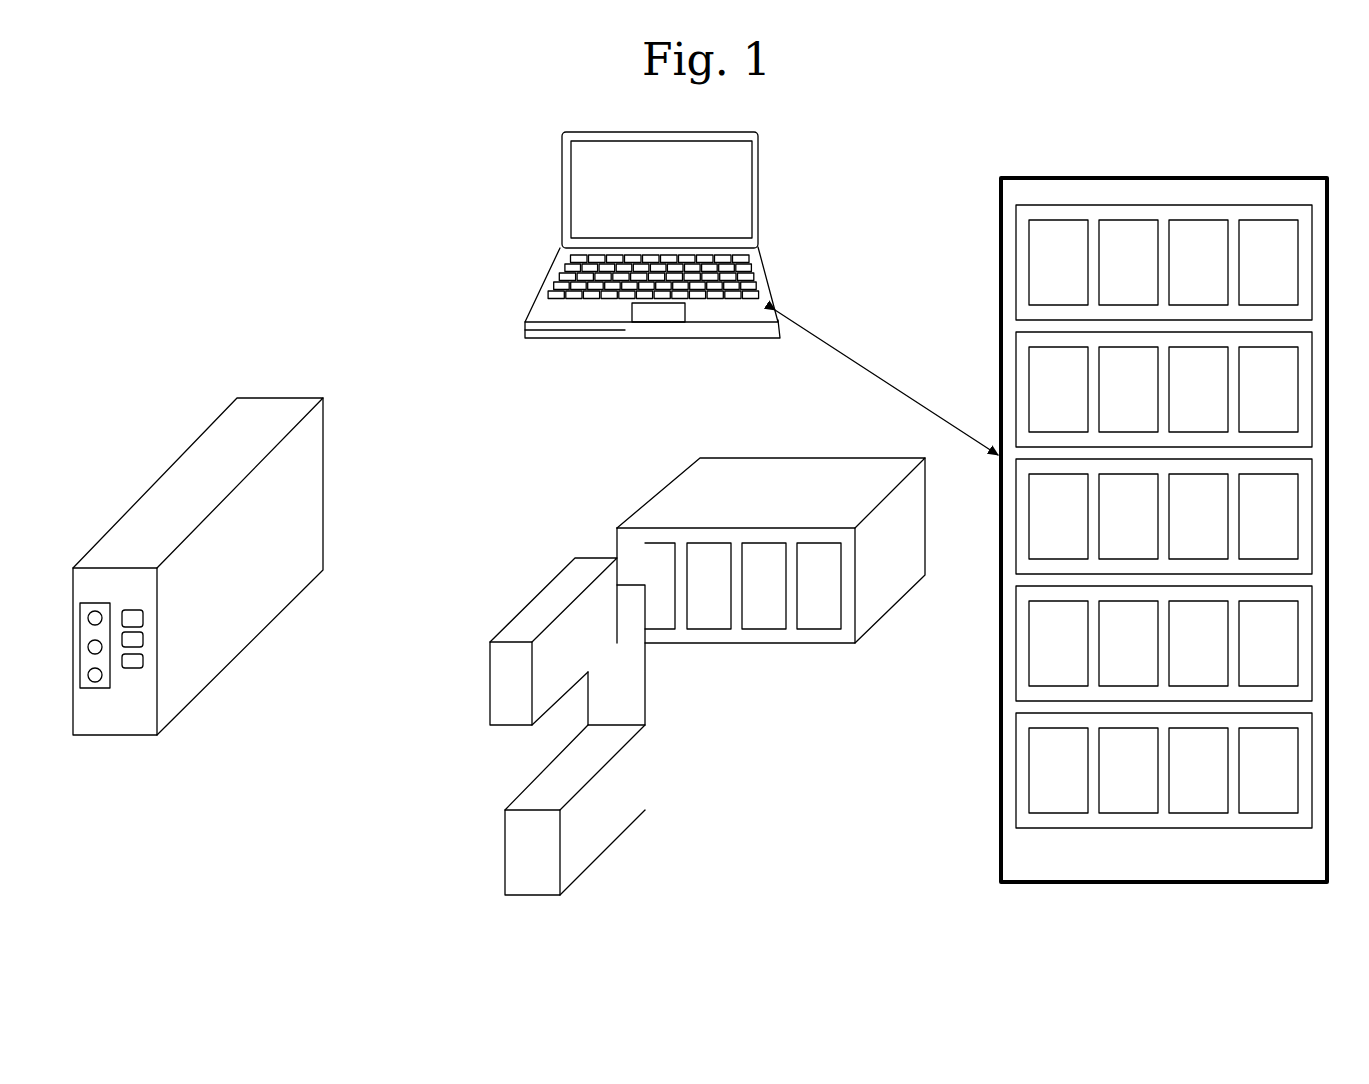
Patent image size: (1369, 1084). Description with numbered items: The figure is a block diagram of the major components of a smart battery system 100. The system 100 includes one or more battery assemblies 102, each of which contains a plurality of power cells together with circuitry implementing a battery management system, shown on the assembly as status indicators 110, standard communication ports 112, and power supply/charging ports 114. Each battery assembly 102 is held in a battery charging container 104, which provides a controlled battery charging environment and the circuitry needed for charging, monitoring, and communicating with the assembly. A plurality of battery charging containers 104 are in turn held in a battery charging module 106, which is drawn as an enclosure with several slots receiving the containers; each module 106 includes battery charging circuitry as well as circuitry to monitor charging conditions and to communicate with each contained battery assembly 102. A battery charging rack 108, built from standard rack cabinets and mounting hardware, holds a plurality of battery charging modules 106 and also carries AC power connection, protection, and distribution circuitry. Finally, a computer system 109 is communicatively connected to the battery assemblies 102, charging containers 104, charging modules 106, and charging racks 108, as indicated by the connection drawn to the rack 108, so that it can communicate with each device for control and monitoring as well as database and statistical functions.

The smart battery system 100 is at (226, 904).
The battery assembly 102 is at (290, 400).
The battery charging container 104 is at (633, 787).
The battery charging module 106 is at (688, 470).
The battery charging rack 108 is at (1097, 177).
The computer system 109 is at (528, 318).
The status indicators 110 is at (100, 688).
The standard communication ports 112 is at (145, 648).
The power supply/charging ports 114 is at (323, 570).